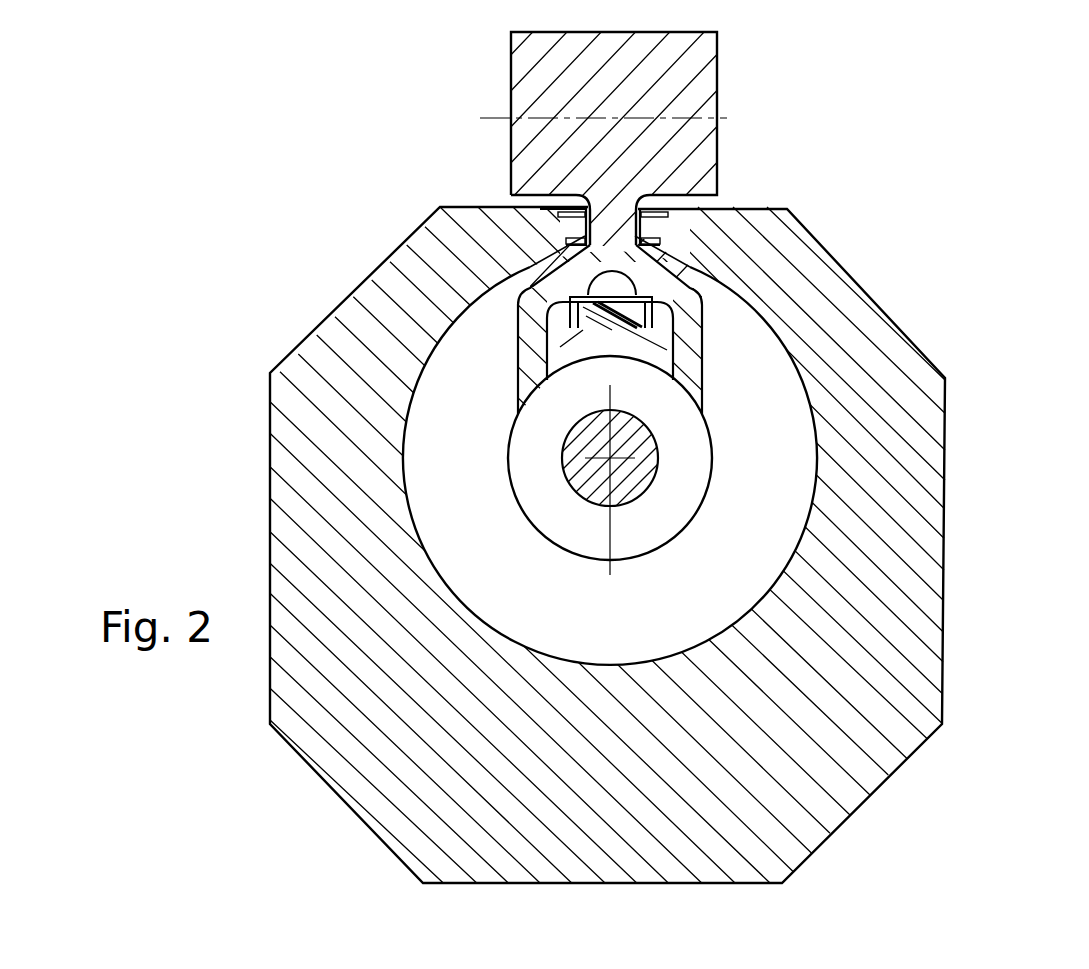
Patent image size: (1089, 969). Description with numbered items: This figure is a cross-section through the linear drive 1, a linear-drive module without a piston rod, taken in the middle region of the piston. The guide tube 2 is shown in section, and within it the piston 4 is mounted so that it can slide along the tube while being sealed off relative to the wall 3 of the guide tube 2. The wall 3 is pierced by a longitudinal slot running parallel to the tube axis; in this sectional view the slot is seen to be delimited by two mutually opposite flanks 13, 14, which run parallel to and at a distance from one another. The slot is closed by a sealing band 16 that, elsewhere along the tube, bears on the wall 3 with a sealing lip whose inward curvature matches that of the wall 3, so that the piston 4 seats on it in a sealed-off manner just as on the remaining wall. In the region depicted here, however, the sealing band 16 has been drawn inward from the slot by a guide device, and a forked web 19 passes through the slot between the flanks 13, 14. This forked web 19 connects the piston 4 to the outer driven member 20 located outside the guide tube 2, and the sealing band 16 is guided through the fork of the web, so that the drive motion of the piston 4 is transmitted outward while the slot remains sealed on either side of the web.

The linear drive 1 is at (898, 100).
The guide tube 2 is at (873, 590).
The wall 3 is at (790, 358).
The piston 4 is at (742, 694).
The flank 13 is at (580, 238).
The flank 14 is at (650, 222).
The sealing band 16 is at (557, 347).
The forked web 19 is at (655, 250).
The outer driven member 20 is at (692, 74).